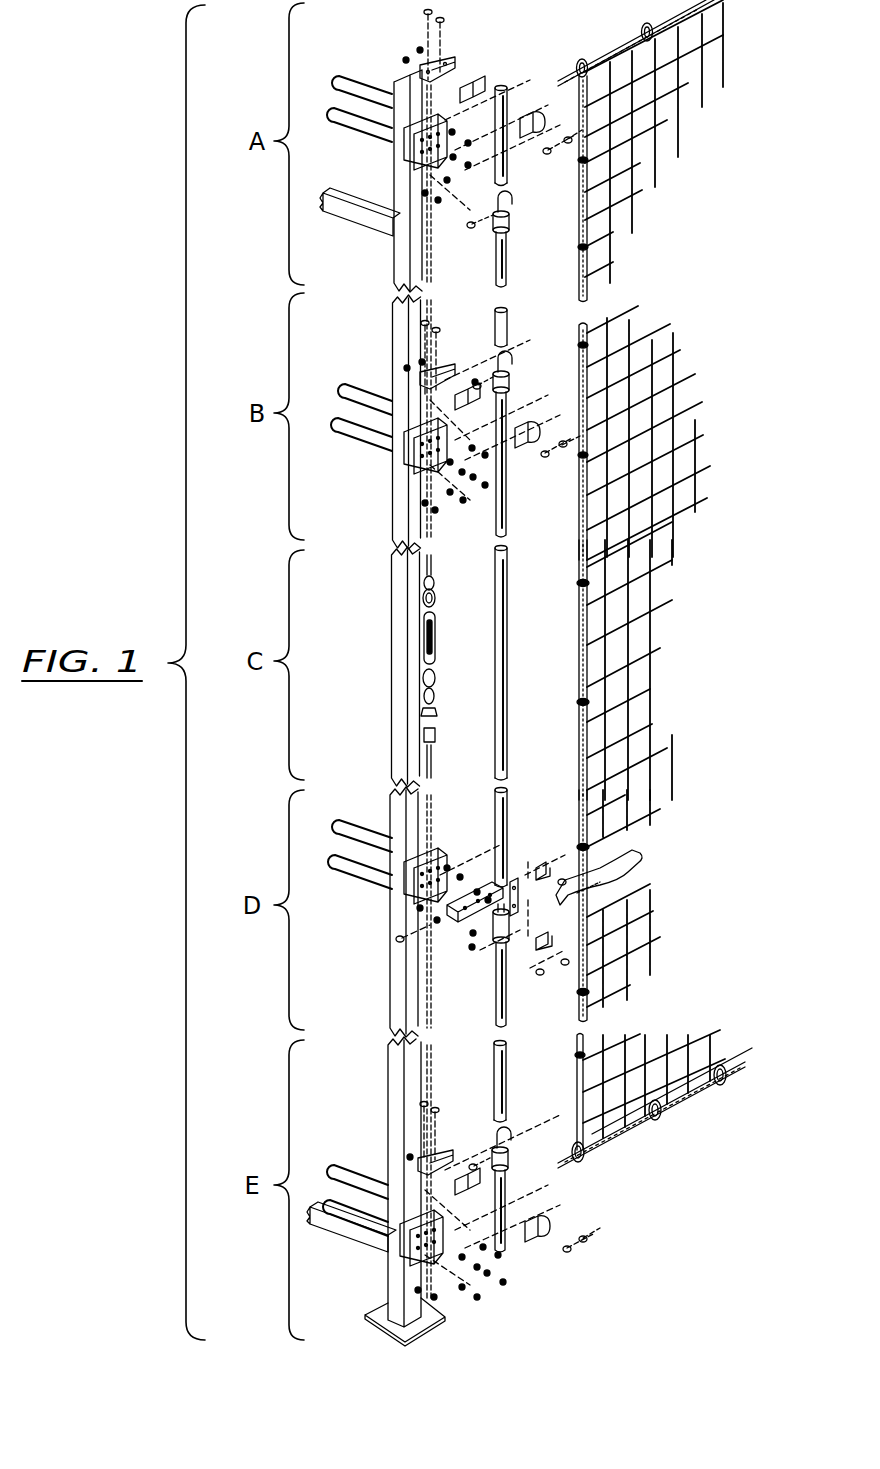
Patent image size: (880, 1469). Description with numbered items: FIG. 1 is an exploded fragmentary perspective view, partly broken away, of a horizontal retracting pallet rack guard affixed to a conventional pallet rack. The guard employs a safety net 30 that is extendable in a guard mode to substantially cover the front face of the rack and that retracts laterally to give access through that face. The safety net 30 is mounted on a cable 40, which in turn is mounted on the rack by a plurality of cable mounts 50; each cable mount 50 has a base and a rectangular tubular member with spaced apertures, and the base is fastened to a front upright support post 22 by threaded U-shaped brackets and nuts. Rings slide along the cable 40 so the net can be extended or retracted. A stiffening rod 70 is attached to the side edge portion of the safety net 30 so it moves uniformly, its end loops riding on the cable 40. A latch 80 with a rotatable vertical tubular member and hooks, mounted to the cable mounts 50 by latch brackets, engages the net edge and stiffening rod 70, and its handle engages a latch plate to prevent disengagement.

The front upright support post 22 is at (392, 908).
The safety net 30 is at (632, 207).
The cable 40 is at (610, 1143).
The cable mount 50 is at (420, 468).
The stiffening rod 70 is at (578, 256).
The latch 80 is at (483, 868).